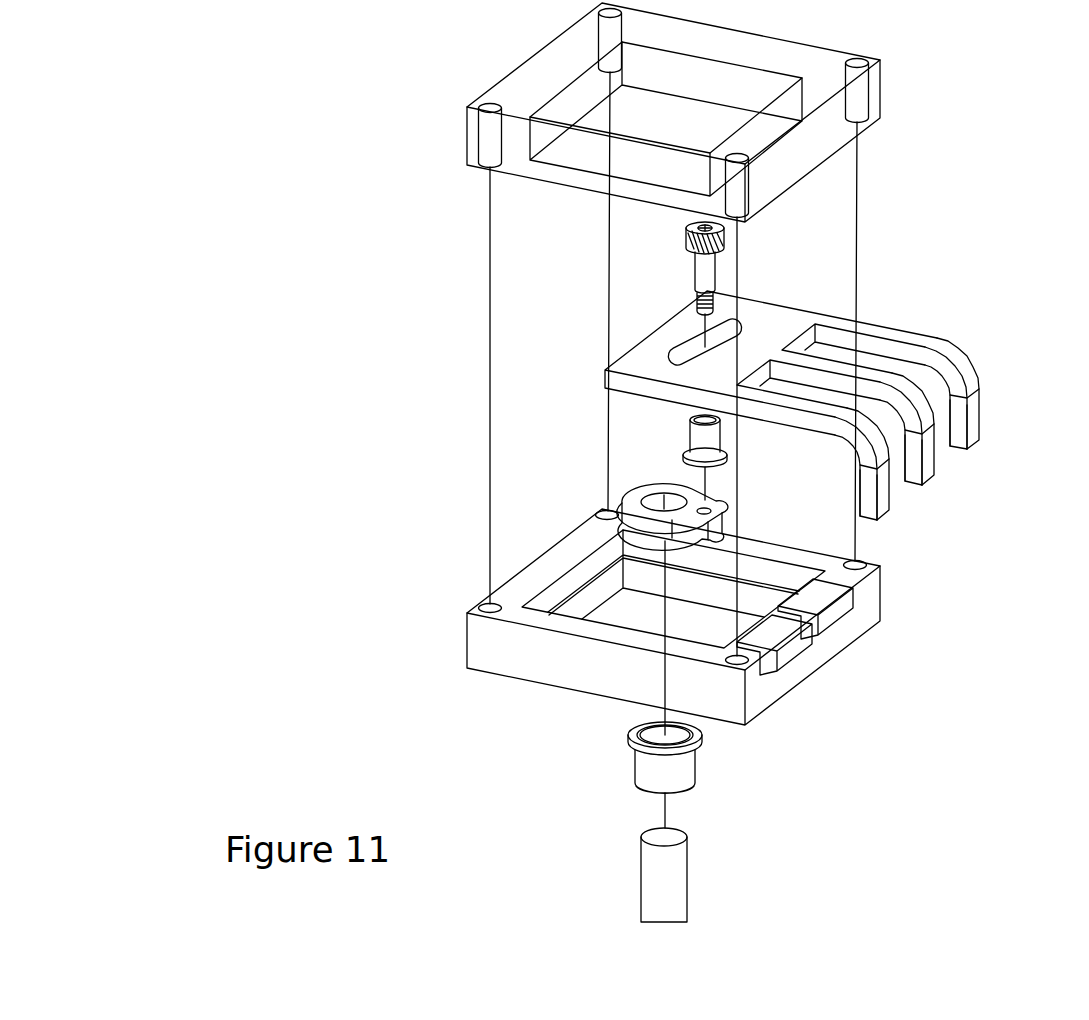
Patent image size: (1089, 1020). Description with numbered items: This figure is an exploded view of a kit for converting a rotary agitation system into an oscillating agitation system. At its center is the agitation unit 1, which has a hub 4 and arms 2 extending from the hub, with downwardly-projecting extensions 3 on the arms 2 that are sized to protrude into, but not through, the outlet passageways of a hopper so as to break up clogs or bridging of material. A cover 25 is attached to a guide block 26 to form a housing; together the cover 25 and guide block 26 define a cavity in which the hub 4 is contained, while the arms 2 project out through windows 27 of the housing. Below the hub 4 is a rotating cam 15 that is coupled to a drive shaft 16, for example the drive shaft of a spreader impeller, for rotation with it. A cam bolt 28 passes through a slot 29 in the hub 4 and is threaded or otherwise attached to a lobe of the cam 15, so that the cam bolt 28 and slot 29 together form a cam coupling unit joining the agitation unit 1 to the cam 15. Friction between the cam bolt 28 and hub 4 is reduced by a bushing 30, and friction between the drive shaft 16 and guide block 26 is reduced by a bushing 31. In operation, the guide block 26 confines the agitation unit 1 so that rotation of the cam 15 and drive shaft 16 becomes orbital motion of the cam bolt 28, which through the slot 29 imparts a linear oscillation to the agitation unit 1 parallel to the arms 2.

The agitation unit 1 is at (840, 396).
The arms 2 is at (899, 401).
The downwardly-projecting extensions 3 is at (882, 512).
The hub 4 is at (771, 353).
The cam 15 is at (642, 487).
The drive shaft 16 is at (691, 878).
The cover 25 is at (884, 90).
The guide block 26 is at (756, 617).
The windows 27 is at (866, 595).
The cam bolt 28 is at (692, 265).
The slot 29 is at (685, 352).
The bushing 30 is at (687, 435).
The bushing 31 is at (701, 757).